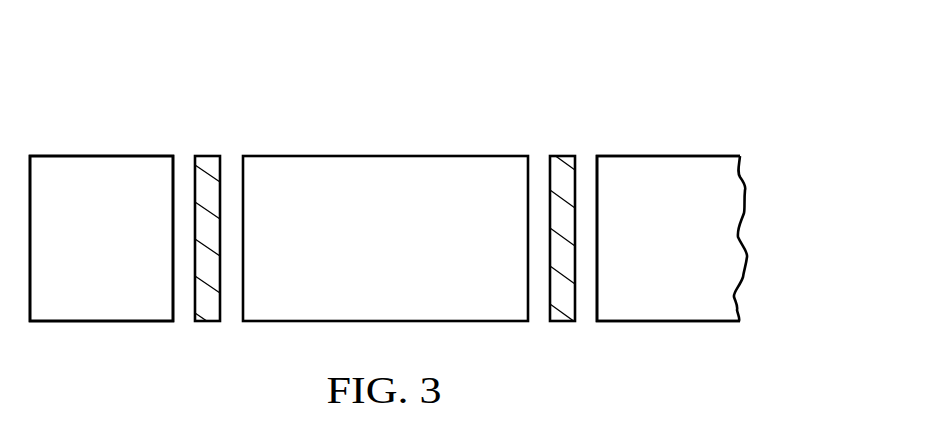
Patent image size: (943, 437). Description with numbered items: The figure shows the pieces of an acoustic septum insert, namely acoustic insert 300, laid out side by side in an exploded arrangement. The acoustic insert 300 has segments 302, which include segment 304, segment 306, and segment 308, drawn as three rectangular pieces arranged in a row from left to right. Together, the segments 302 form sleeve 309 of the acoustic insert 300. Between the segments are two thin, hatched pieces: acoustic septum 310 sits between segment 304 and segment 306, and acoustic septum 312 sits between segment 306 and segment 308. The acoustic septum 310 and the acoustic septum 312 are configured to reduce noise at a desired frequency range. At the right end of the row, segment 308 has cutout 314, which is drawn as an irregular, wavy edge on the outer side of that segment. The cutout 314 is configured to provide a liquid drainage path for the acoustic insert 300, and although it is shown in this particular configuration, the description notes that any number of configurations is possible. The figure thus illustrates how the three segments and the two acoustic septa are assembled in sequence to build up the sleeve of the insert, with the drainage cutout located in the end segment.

The acoustic insert 300 is at (246, 83).
The segments 302 is at (86, 347).
The segment 304 is at (102, 155).
The segment 306 is at (385, 155).
The segment 308 is at (667, 155).
The sleeve 309 is at (701, 342).
The acoustic septum 310 is at (209, 155).
The acoustic septum 312 is at (562, 155).
The cutout 314 is at (765, 239).